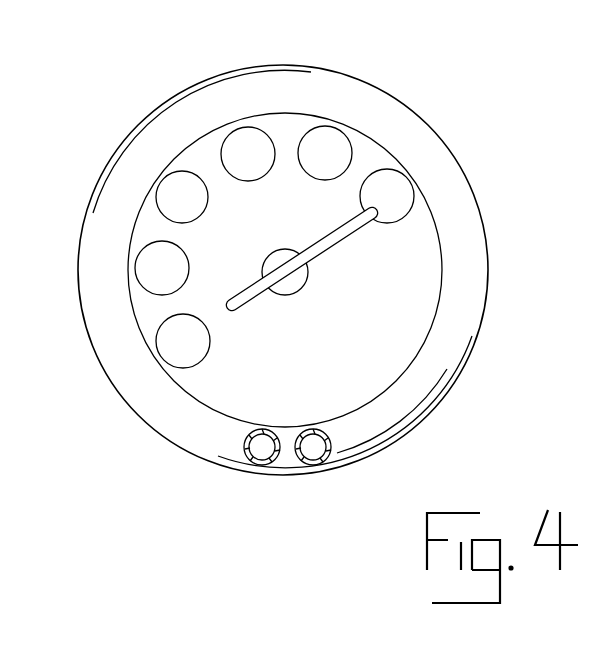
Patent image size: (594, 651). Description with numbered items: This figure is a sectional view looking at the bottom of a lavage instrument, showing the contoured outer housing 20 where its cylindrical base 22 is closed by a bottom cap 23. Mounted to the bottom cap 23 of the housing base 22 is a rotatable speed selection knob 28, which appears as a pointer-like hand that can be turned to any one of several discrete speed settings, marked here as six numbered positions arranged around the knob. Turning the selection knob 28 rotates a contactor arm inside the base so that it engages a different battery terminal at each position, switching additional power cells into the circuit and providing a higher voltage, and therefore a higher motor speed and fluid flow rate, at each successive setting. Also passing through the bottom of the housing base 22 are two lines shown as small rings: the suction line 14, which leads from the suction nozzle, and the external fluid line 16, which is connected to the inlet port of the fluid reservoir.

The outer housing 20 is at (118, 148).
The cylindrical base 22 is at (432, 127).
The bottom cap 23 is at (405, 336).
The speed selection knob 28 is at (327, 243).
The suction line 14 is at (262, 450).
The external fluid line 16 is at (315, 448).